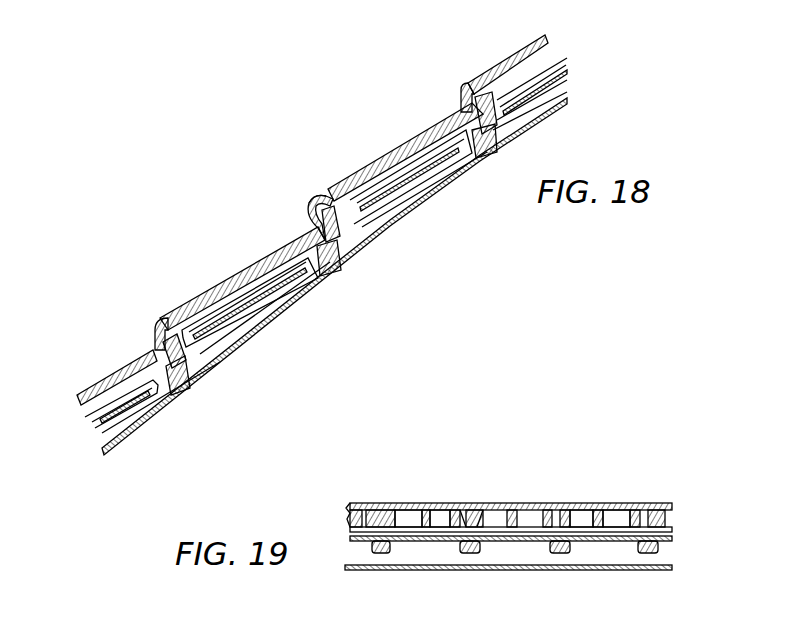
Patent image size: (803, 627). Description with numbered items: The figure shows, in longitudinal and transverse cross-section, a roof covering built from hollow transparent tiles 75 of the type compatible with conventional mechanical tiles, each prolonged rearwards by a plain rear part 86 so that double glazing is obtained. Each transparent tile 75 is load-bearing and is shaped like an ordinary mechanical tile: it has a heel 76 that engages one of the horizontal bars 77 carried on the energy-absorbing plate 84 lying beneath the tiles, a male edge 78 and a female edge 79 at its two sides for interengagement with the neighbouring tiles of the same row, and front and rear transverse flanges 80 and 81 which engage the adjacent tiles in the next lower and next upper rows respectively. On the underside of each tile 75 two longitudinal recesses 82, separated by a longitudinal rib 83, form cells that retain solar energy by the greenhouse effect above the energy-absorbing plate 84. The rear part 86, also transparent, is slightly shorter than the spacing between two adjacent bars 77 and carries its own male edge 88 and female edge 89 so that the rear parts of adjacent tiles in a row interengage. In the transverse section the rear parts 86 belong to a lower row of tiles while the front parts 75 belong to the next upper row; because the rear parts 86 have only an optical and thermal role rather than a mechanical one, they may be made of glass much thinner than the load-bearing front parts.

In FIG. 18, the hollow transparent tile 75 is at (217, 288).
In FIG. 19, the hollow transparent tile 75 is at (545, 503).
In FIG. 18, the heel 76 is at (341, 240).
In FIG. 18, the horizontal bars 77 is at (335, 268).
In FIG. 19, the male edge 78 is at (464, 511).
In FIG. 19, the female edge 79 is at (478, 511).
In FIG. 18, the front transverse flange 80 is at (306, 214).
In FIG. 18, the rear transverse flange 81 is at (318, 197).
In FIG. 19, the longitudinal recesses 82 is at (437, 517).
In FIG. 19, the longitudinal rib 83 is at (596, 516).
In FIG. 18, the energy-absorbing plate 84 is at (277, 315).
In FIG. 19, the energy-absorbing plate 84 is at (468, 571).
In FIG. 18, the rear part 86 is at (432, 174).
In FIG. 19, the rear part 86 is at (525, 540).
In FIG. 19, the male edge 88 is at (372, 534).
In FIG. 19, the female edge 89 is at (384, 546).